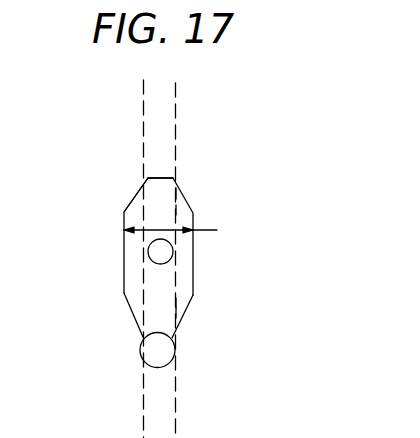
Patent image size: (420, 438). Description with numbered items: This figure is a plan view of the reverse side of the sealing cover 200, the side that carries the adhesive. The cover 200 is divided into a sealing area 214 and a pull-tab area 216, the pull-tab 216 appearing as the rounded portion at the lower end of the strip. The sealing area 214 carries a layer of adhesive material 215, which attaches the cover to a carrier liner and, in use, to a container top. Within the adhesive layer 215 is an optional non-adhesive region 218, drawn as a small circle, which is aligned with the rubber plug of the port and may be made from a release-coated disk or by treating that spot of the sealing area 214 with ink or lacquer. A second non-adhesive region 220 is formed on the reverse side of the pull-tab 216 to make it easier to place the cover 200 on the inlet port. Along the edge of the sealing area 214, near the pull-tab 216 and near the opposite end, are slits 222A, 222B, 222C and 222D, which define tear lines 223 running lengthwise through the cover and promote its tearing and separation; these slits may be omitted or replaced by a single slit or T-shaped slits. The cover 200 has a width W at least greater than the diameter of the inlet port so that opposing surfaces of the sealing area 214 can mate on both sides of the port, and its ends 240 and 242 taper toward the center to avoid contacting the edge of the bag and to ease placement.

The sealing cover 200 is at (189, 371).
The sealing area 214 is at (100, 266).
The layer of adhesive material 215 is at (165, 183).
The pull-tab area 216 is at (133, 362).
The non-adhesive region 218 is at (168, 246).
The non-adhesive region 220 is at (176, 348).
The slit 222A is at (176, 313).
The slit 222B is at (176, 303).
The slit 222C is at (177, 210).
The slit 222D is at (177, 193).
The tear lines 223 is at (177, 88).
The end 240 is at (120, 208).
The end 242 is at (120, 303).